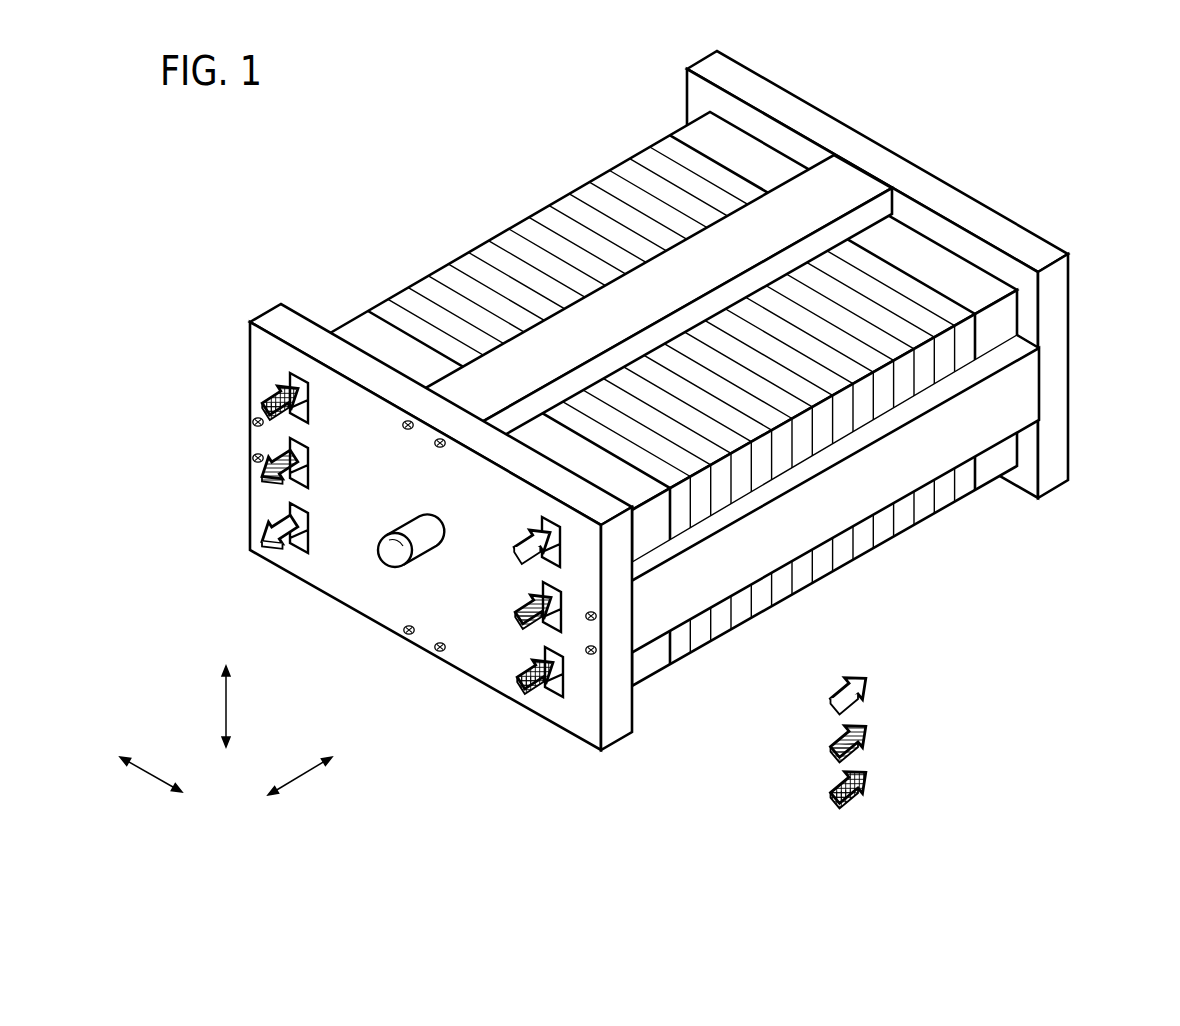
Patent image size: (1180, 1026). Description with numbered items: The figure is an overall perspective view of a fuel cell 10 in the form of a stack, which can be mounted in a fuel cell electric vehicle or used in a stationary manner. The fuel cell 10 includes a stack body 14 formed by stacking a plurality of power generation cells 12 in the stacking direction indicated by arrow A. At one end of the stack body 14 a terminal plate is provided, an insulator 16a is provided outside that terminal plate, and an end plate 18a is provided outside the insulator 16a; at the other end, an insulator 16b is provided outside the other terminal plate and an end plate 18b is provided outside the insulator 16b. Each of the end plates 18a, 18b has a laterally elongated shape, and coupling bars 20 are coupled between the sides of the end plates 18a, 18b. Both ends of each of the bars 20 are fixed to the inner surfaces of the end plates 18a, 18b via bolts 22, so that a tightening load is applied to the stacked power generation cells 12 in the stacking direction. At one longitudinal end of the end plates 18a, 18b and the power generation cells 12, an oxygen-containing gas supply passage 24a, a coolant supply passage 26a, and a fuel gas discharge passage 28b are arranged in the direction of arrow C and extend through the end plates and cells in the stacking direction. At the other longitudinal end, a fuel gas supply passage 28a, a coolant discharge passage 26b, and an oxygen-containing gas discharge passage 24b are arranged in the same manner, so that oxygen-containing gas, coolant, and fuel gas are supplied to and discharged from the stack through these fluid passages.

The fuel cell 10 is at (1137, 102).
The power generation cell 12 is at (505, 245).
The stack body 14 is at (670, 377).
The insulator 16a is at (355, 330).
The insulator 16b is at (685, 133).
The end plate 18a is at (271, 316).
The end plate 18b is at (768, 94).
The coupling bar 20 is at (853, 185).
The bolt 22 is at (407, 431).
The oxygen-containing gas supply passage 24a is at (540, 525).
The oxygen-containing gas discharge passage 24b is at (290, 510).
The coolant supply passage 26a is at (540, 592).
The coolant discharge passage 26b is at (290, 442).
The fuel gas supply passage 28a is at (290, 376).
The fuel gas discharge passage 28b is at (540, 657).